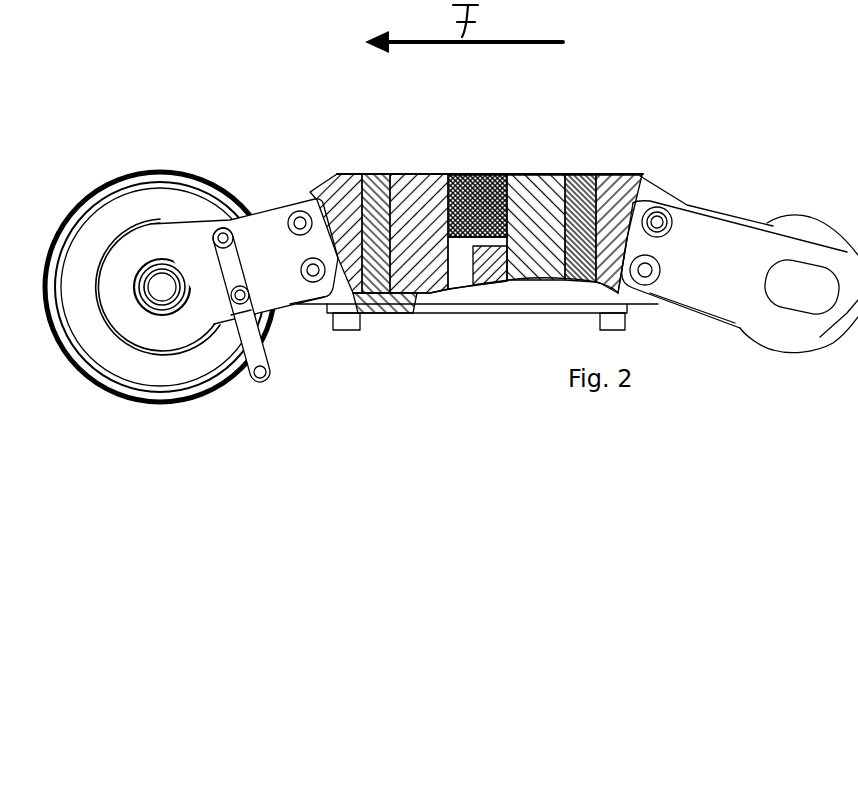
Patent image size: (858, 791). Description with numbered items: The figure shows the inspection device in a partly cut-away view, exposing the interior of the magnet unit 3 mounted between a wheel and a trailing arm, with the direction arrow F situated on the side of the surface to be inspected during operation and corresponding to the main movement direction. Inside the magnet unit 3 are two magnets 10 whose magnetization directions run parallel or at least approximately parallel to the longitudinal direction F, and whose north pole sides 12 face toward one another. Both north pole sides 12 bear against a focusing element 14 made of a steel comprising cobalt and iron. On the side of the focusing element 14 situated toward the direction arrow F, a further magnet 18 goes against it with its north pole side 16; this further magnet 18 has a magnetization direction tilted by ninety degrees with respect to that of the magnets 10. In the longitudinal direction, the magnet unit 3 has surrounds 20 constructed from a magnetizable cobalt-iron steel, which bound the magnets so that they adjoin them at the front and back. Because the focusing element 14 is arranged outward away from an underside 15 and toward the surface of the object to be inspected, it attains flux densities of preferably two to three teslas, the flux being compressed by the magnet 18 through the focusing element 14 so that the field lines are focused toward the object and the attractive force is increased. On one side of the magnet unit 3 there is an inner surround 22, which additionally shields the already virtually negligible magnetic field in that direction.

The magnet unit 3 is at (407, 312).
The magnets 10 is at (416, 181).
The north pole sides 12 is at (437, 173).
The focusing element 14 is at (485, 173).
The underside 15 is at (447, 310).
The north pole side 16 is at (473, 278).
The further magnet 18 is at (497, 278).
The surrounds 20 is at (362, 173).
The inner surround 22 is at (387, 313).